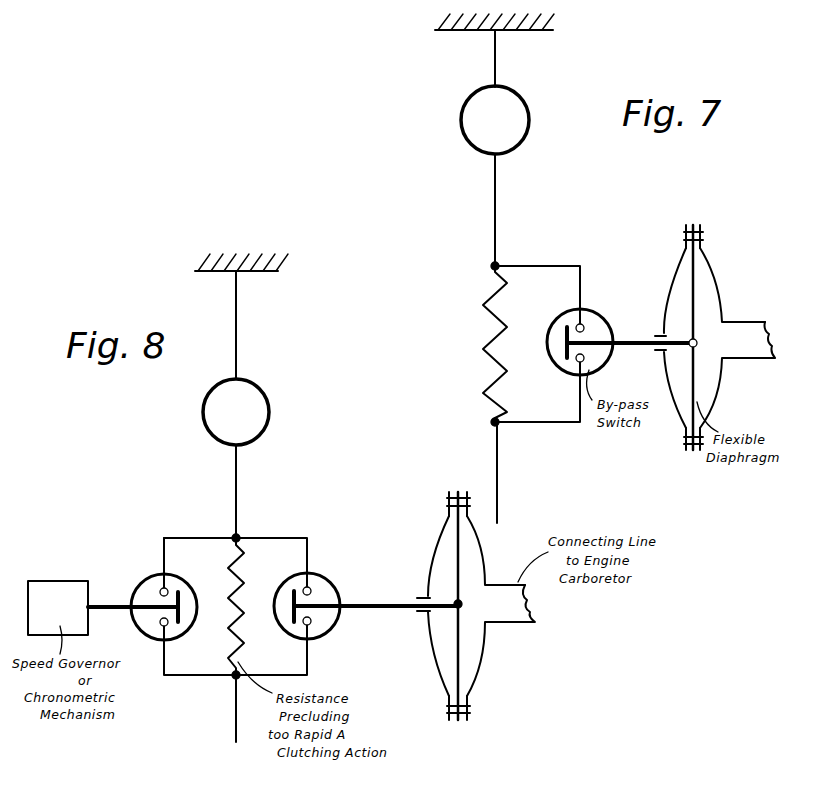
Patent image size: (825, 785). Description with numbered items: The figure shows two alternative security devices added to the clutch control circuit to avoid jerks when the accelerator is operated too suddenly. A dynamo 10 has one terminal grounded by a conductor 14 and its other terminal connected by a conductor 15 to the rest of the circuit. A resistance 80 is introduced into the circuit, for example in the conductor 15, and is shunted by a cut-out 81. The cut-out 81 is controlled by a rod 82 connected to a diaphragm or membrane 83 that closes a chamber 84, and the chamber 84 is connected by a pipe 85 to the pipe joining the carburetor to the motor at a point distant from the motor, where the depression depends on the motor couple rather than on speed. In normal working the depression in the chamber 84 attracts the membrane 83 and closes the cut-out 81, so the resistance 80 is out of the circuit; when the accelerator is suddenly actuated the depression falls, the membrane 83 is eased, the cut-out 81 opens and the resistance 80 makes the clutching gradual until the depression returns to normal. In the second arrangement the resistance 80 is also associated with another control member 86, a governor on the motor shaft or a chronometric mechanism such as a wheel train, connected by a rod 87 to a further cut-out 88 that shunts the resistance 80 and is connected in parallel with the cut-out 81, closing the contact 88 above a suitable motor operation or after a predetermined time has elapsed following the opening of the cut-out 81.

In FIG. 7, the dynamo 10 is at (530, 112).
In FIG. 8, the dynamo 10 is at (268, 407).
In FIG. 7, the conductor 14 is at (497, 63).
In FIG. 8, the conductor 14 is at (238, 316).
In FIG. 7, the conductor 15 is at (495, 481).
In FIG. 8, the conductor 15 is at (234, 707).
In FIG. 7, the resistance 80 is at (490, 345).
In FIG. 8, the resistance 80 is at (238, 563).
In FIG. 7, the cut-out 81 is at (601, 312).
In FIG. 8, the cut-out 81 is at (322, 582).
In FIG. 7, the rod 82 is at (631, 346).
In FIG. 8, the rod 82 is at (373, 608).
In FIG. 7, the diaphragm or membrane 83 is at (690, 273).
In FIG. 8, the diaphragm or membrane 83 is at (455, 540).
In FIG. 7, the chamber 84 is at (709, 292).
In FIG. 8, the chamber 84 is at (470, 562).
In FIG. 7, the pipe 85 is at (750, 347).
In FIG. 8, the pipe 85 is at (517, 614).
In FIG. 8, the control member 86 is at (63, 578).
In FIG. 8, the rod 87 is at (109, 613).
In FIG. 8, the cut-out 88 is at (152, 578).